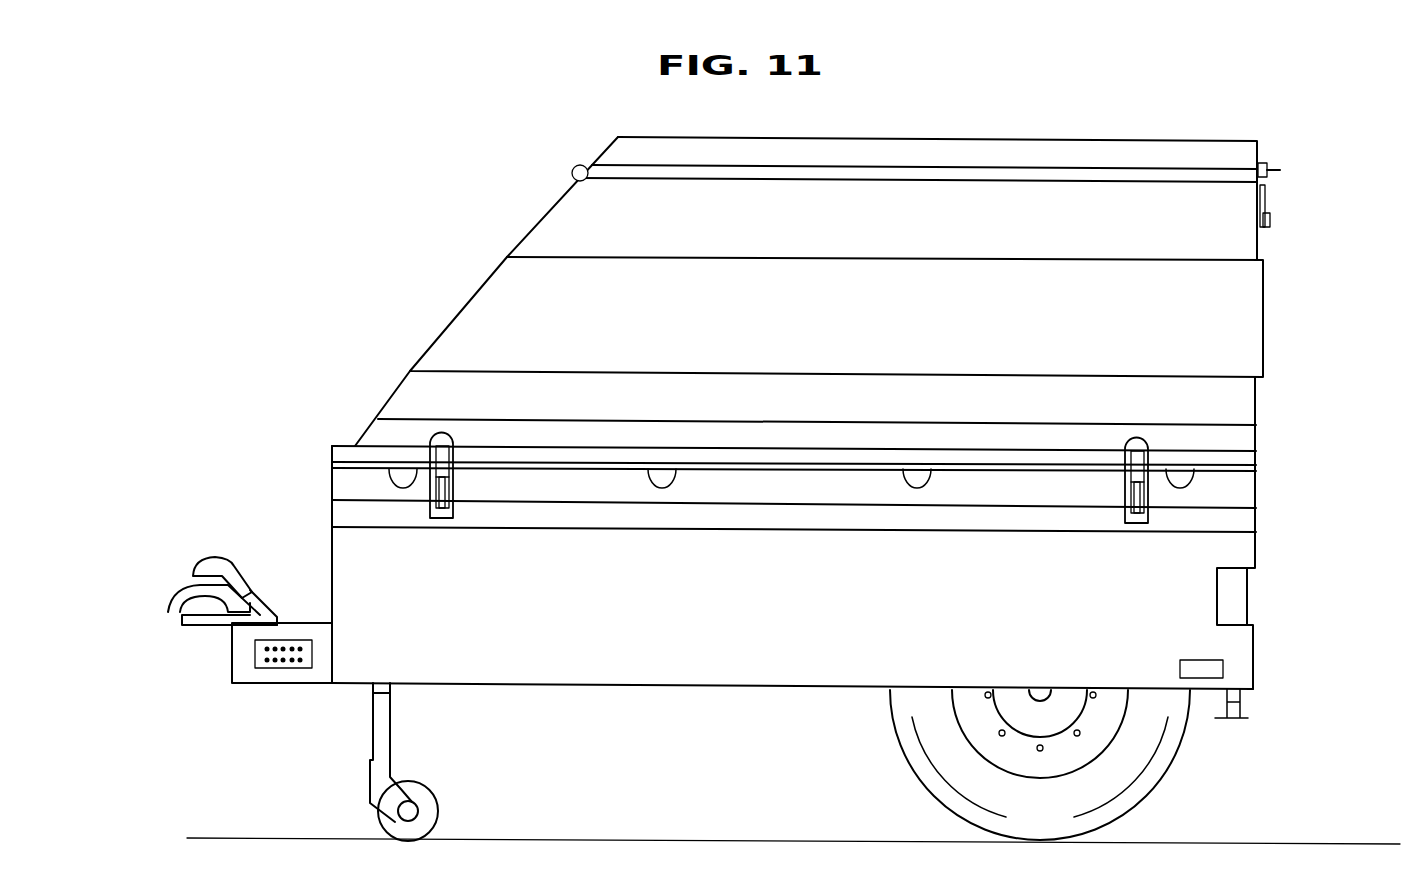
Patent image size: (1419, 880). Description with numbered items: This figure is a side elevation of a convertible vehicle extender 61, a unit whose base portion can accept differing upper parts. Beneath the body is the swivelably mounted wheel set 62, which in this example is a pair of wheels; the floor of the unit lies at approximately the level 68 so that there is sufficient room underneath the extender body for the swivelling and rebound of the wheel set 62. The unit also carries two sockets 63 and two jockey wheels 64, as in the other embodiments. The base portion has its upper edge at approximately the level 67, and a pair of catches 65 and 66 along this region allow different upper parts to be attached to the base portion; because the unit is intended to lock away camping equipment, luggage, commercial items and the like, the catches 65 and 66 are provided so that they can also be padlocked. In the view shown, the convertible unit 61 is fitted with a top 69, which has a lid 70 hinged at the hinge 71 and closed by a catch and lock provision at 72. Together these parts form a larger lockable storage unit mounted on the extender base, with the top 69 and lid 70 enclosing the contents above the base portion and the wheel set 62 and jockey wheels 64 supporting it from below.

The vehicle extender 61 is at (745, 668).
The wheel set 62 is at (1150, 775).
The sockets 63 is at (168, 602).
The jockey wheels 64 is at (386, 736).
The catch 65 is at (438, 458).
The catch 66 is at (1137, 458).
The level of upper edge of base portion 67 is at (1270, 461).
The floor level 68 is at (1270, 525).
The top 69 is at (1055, 197).
The lid 70 is at (934, 147).
The hinge 71 is at (571, 173).
The catch and lock provision 72 is at (1268, 190).